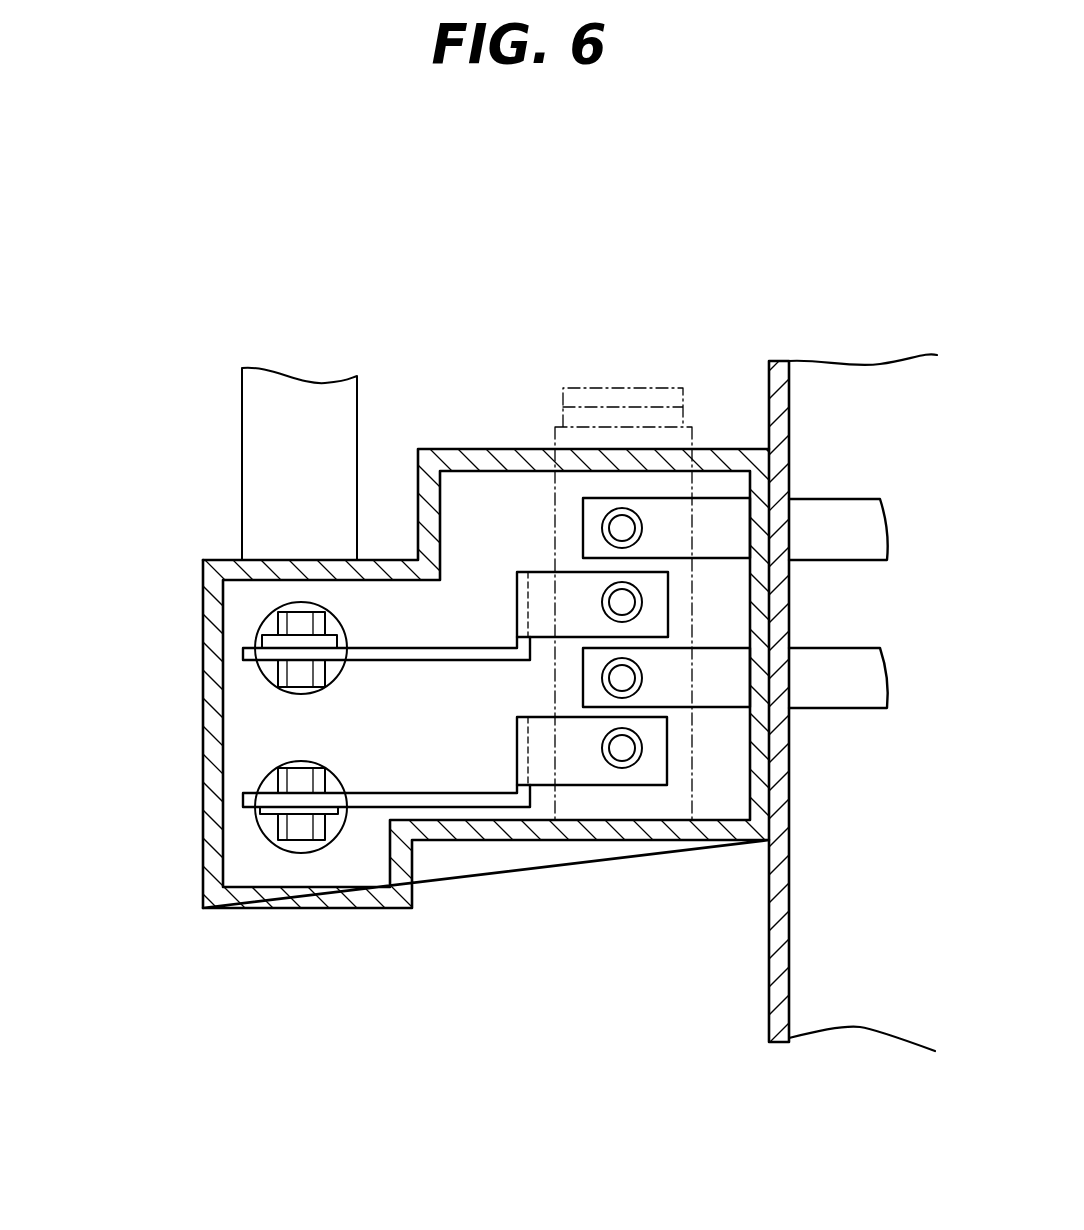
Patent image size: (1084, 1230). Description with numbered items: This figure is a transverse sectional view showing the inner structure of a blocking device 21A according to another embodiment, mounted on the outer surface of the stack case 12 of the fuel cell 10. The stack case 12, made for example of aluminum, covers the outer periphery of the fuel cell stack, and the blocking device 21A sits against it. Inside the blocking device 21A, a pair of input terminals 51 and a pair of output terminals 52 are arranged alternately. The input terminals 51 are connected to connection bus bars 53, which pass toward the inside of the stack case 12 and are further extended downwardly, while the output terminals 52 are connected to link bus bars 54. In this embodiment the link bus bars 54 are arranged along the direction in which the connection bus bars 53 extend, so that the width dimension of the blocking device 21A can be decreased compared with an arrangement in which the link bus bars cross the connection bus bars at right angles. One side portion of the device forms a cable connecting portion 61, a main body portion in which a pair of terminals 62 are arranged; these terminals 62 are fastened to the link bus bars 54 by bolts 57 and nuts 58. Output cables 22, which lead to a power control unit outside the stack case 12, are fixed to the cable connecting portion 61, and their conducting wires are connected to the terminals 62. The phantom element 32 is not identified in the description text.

The fuel cell 10 is at (692, 1012).
The stack case 12 is at (773, 952).
The blocking device 21A is at (357, 917).
The output cables 22 is at (250, 422).
The mating connector (phantom) 32 is at (560, 433).
The input terminals 51 is at (605, 515).
The output terminals 52 is at (607, 590).
The connection bus bars 53 is at (850, 523).
The link bus bars 54 is at (423, 652).
The bolts 57 is at (273, 677).
The nuts 58 is at (280, 617).
The cable connecting portion 61 is at (203, 597).
The terminals 62 is at (262, 637).